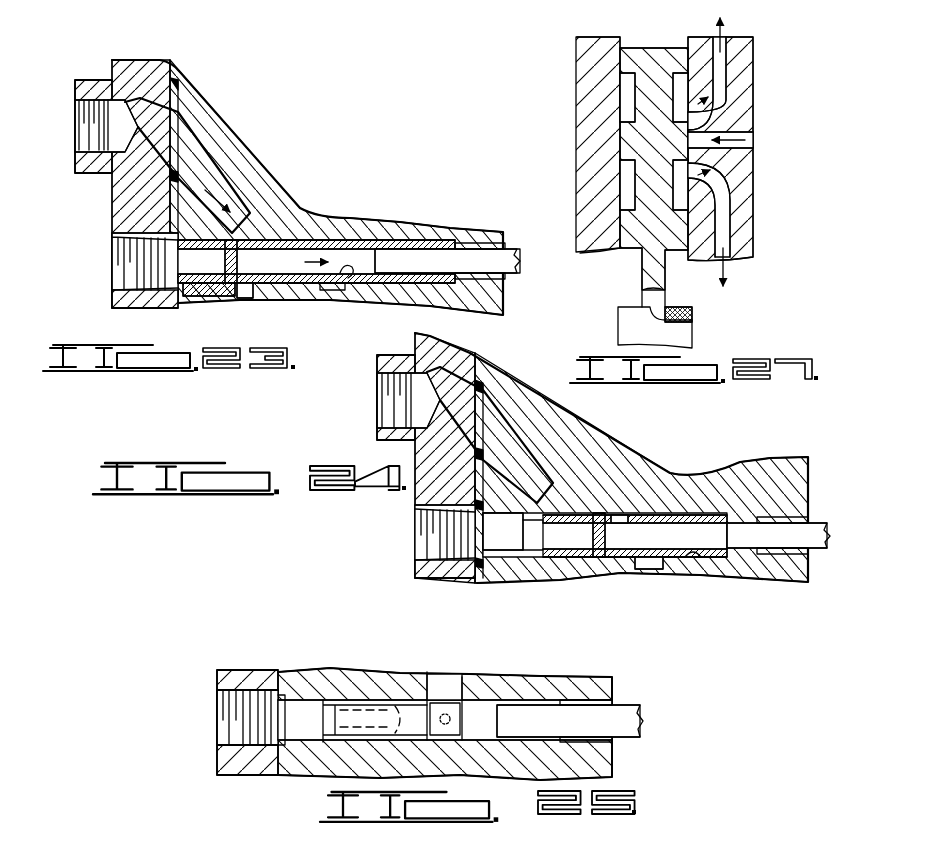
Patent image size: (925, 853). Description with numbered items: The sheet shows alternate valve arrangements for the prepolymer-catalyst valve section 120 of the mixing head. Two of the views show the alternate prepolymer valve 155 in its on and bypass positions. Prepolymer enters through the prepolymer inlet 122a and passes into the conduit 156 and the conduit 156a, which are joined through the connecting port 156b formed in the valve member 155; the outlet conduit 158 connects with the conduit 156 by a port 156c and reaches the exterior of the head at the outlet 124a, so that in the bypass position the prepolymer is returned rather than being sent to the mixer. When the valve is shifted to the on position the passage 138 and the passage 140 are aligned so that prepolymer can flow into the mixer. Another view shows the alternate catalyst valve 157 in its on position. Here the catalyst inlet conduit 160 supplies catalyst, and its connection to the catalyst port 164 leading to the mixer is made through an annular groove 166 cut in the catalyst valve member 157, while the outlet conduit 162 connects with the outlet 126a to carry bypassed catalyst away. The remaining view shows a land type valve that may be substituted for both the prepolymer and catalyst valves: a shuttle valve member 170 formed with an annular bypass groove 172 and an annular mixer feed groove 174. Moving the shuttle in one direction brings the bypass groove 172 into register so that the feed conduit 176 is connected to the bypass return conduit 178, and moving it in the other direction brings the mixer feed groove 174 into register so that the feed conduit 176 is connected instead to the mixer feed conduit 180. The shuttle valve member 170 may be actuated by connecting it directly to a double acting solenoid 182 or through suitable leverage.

In FIG. 23, the prepolymer-catalyst valve section 120 is at (205, 102).
In FIG. 27, the prepolymer-catalyst valve section 120 is at (577, 60).
In FIG. 24, the prepolymer-catalyst valve section 120 is at (590, 428).
In FIG. 25, the prepolymer-catalyst valve section 120 is at (560, 677).
In FIG. 23, the prepolymer inlet 122a is at (84, 138).
In FIG. 24, the prepolymer inlet 122a is at (400, 410).
In FIG. 23, the outlet 124a is at (135, 275).
In FIG. 24, the outlet 124a is at (440, 543).
In FIG. 25, the outlet 126a is at (240, 730).
In FIG. 23, the passage 138 is at (344, 272).
In FIG. 23, the passage 140 is at (335, 283).
In FIG. 23, the alternate prepolymer valve 155 is at (318, 245).
In FIG. 24, the alternate prepolymer valve 155 is at (647, 515).
In FIG. 23, the conduit 156 is at (200, 172).
In FIG. 24, the conduit 156 is at (520, 455).
In FIG. 24, the conduit 156a is at (622, 540).
In FIG. 23, the connecting port 156b is at (316, 261).
In FIG. 24, the connecting port 156b is at (627, 522).
In FIG. 23, the port 156c is at (183, 297).
In FIG. 24, the port 156c is at (581, 535).
In FIG. 25, the alternate catalyst valve 157 is at (403, 700).
In FIG. 23, the outlet conduit 158 is at (205, 262).
In FIG. 24, the outlet conduit 158 is at (500, 550).
In FIG. 25, the catalyst inlet conduit 160 is at (453, 680).
In FIG. 25, the outlet conduit 162 is at (347, 700).
In FIG. 25, the catalyst port 164 is at (420, 748).
In FIG. 25, the annular groove 166 is at (440, 735).
In FIG. 27, the shuttle valve member 170 is at (627, 264).
In FIG. 27, the annular bypass groove 172 is at (628, 182).
In FIG. 27, the annular mixer feed groove 174 is at (623, 88).
In FIG. 27, the feed conduit 176 is at (720, 120).
In FIG. 27, the bypass return conduit 178 is at (740, 225).
In FIG. 27, the mixer feed conduit 180 is at (727, 65).
In FIG. 27, the double acting solenoid 182 is at (627, 335).